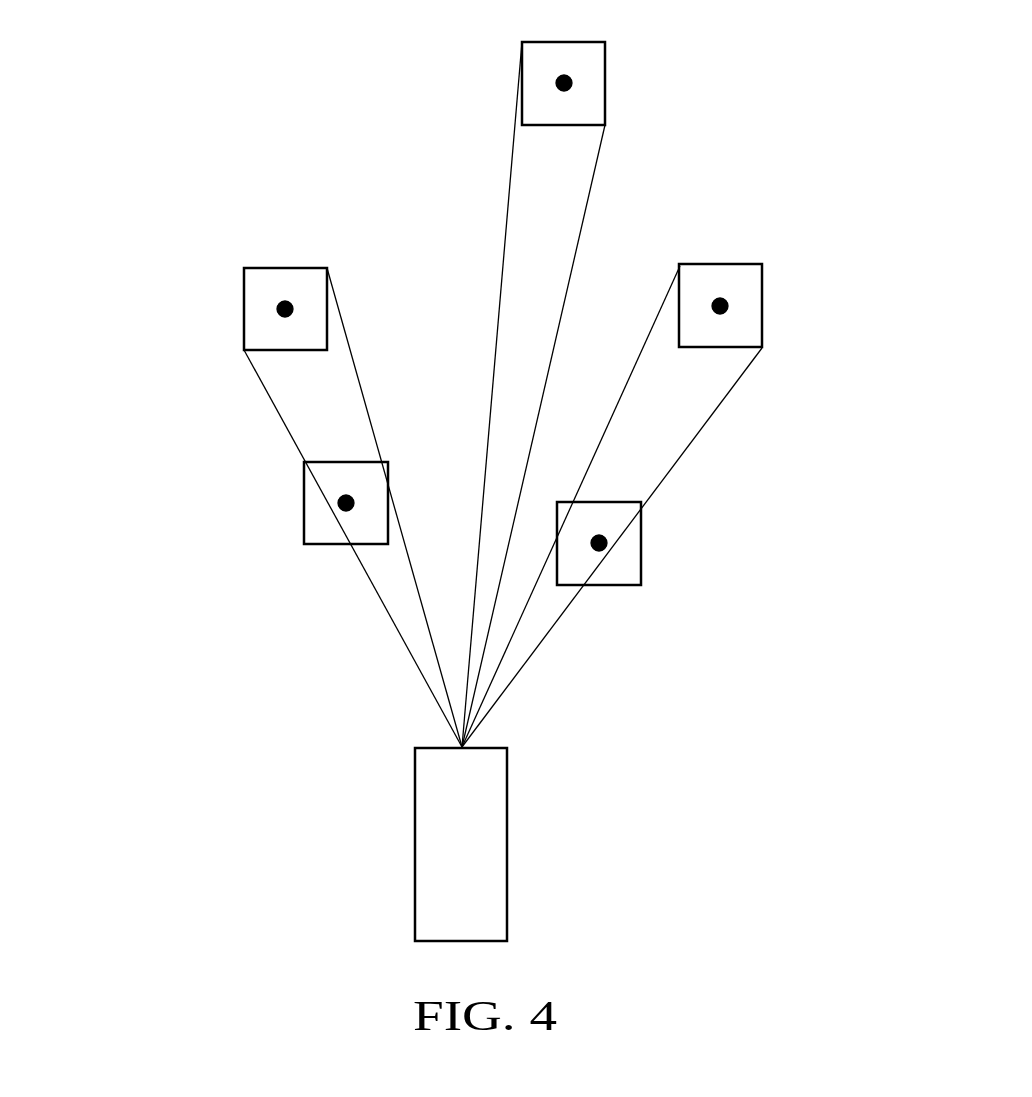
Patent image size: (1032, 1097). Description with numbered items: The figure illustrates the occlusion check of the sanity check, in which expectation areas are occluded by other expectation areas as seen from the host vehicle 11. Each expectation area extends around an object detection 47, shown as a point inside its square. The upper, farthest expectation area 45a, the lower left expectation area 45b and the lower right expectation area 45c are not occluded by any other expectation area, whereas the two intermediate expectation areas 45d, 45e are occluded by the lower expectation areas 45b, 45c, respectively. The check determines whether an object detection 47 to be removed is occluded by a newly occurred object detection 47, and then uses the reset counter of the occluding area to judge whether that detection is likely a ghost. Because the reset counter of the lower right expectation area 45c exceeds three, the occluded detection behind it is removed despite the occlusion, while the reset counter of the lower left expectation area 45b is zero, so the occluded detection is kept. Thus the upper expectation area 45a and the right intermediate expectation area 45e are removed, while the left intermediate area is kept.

The host vehicle 11 is at (507, 893).
The upper expectation area 45a is at (605, 95).
The lower left expectation area 45b is at (304, 530).
The lower right expectation area 45c is at (641, 517).
The left intermediate expectation area 45d is at (244, 322).
The right intermediate expectation area 45e is at (762, 318).
The object detection 47 is at (564, 83).